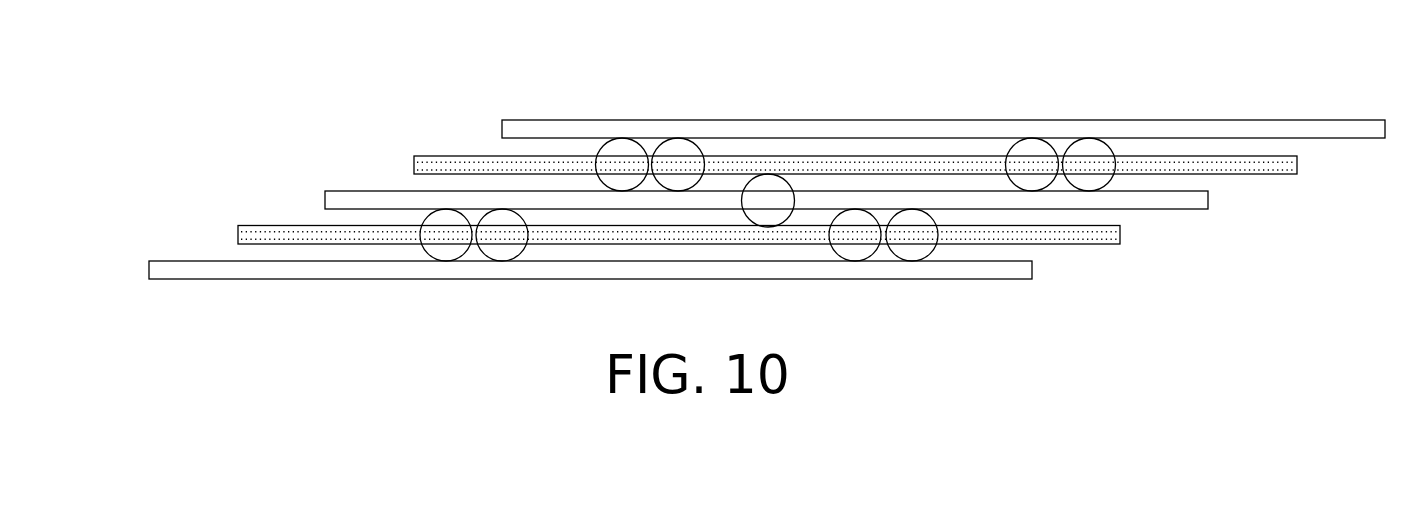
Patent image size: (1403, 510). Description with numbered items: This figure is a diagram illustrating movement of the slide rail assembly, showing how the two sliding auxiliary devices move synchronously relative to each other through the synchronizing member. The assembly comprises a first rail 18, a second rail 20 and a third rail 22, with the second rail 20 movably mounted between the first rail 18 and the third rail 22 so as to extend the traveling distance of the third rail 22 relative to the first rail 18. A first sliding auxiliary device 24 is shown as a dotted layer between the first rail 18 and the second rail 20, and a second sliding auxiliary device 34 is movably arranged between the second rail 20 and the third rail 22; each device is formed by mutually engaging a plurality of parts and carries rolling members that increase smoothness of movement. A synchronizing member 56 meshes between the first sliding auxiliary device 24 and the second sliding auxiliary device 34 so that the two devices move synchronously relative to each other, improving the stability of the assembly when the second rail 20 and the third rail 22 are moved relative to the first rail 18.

The first rail 18 is at (878, 272).
The second rail 20 is at (1160, 200).
The third rail 22 is at (1213, 132).
The first sliding auxiliary device 24 is at (602, 253).
The second sliding auxiliary device 34 is at (893, 150).
The synchronizing member 56 is at (768, 186).